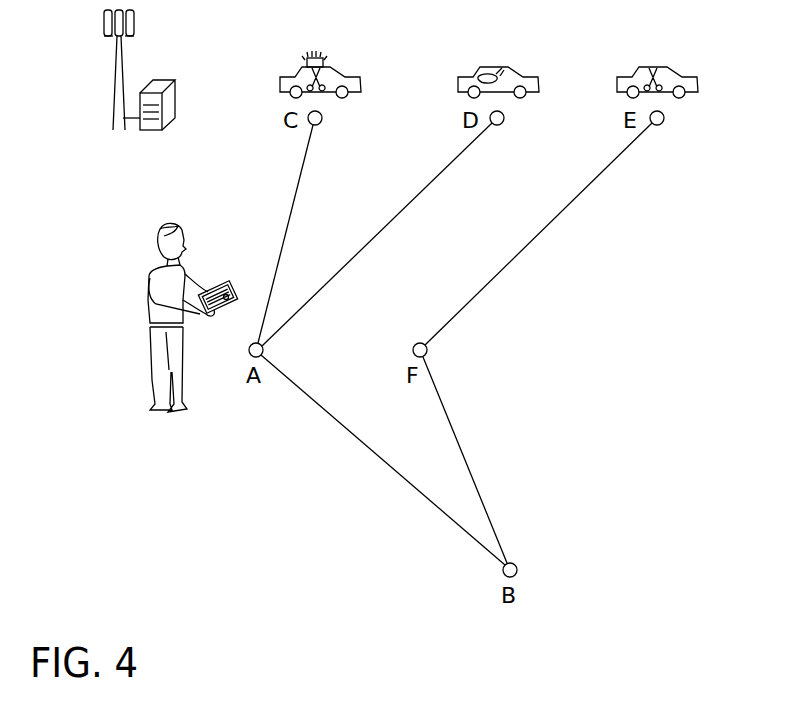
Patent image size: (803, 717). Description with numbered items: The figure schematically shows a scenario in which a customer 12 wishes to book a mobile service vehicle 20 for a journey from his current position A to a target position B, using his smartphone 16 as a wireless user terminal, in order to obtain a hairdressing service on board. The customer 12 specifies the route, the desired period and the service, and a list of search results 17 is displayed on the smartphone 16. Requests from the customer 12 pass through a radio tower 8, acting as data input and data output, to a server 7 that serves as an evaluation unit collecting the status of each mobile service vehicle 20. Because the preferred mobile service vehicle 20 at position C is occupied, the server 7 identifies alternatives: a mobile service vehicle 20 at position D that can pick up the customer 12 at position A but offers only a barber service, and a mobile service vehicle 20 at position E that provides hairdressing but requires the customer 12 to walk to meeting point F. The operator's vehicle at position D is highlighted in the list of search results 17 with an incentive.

The server 7 is at (172, 100).
The radio tower 8 is at (118, 58).
The customer 12 is at (146, 300).
The smartphone 16 is at (211, 284).
The list of search results 17 is at (226, 297).
The mobile service vehicle 20 is at (340, 77).